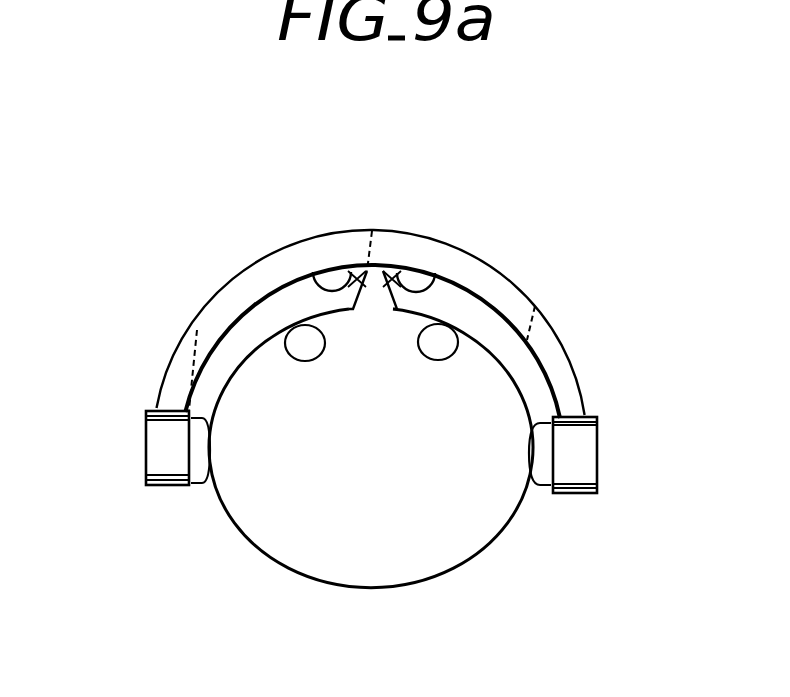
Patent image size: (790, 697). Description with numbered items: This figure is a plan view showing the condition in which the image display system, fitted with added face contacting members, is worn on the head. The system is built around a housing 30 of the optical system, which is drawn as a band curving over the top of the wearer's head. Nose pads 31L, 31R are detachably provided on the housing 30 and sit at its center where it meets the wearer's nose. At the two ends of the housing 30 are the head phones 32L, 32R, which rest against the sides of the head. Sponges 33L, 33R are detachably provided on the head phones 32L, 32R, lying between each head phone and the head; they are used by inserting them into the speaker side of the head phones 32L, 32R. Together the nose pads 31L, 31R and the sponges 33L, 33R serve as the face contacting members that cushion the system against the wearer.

The housing 30 is at (394, 232).
The nose pad 31L is at (313, 276).
The nose pad 31R is at (438, 276).
The head phone 32L is at (146, 436).
The head phone 32R is at (597, 450).
The sponge 33L is at (193, 484).
The sponge 33R is at (540, 487).